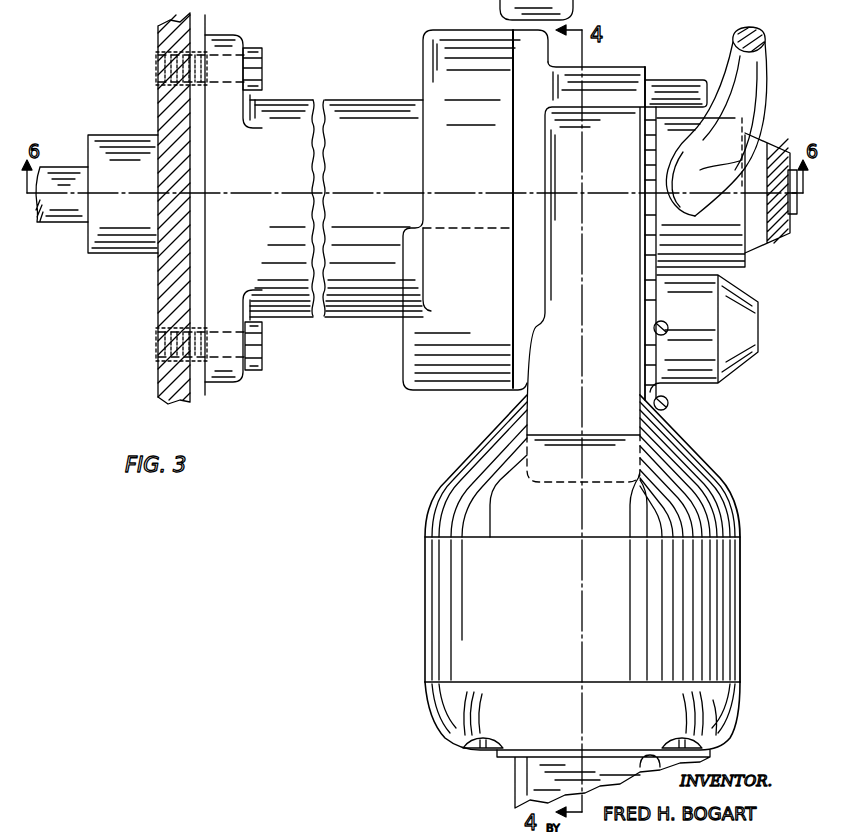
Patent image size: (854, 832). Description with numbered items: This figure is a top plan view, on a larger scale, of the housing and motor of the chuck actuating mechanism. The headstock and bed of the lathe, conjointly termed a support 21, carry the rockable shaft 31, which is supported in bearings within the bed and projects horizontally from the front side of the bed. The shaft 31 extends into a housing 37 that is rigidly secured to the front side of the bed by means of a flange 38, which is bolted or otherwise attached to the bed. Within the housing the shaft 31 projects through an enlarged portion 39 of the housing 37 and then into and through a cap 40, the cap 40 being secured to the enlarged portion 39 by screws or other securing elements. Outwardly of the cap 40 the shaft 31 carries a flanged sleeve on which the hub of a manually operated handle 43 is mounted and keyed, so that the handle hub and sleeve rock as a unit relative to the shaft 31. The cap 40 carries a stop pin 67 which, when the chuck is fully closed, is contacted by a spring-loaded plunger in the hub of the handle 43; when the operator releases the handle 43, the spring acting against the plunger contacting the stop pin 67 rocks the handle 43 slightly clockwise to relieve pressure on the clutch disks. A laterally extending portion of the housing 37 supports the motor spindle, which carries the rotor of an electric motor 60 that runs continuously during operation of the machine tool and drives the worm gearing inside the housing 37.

The support 21 is at (166, 296).
The shaft 31 is at (55, 172).
The housing 37 is at (373, 116).
The flange 38 is at (226, 372).
The enlarged portion 39 is at (428, 37).
The cap 40 is at (603, 80).
The manually operated handle 43 is at (753, 80).
The electric motor 60 is at (448, 580).
The stop pin 67 is at (673, 88).